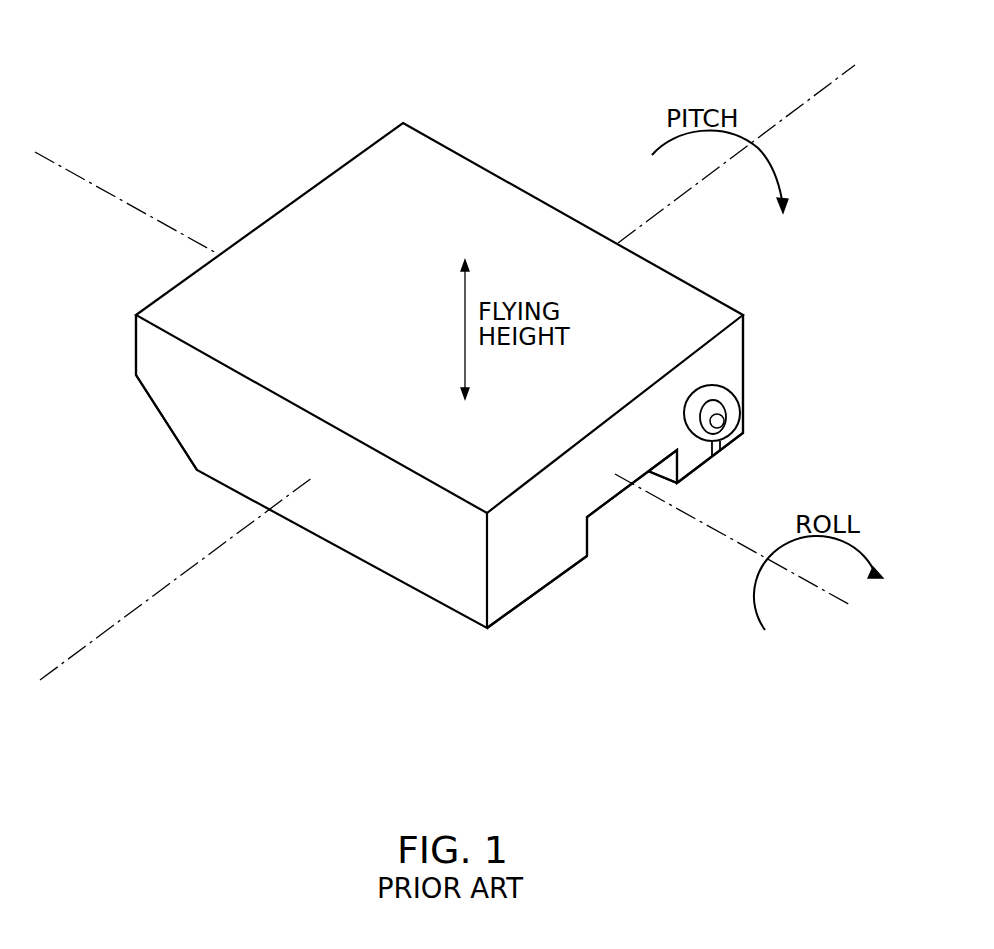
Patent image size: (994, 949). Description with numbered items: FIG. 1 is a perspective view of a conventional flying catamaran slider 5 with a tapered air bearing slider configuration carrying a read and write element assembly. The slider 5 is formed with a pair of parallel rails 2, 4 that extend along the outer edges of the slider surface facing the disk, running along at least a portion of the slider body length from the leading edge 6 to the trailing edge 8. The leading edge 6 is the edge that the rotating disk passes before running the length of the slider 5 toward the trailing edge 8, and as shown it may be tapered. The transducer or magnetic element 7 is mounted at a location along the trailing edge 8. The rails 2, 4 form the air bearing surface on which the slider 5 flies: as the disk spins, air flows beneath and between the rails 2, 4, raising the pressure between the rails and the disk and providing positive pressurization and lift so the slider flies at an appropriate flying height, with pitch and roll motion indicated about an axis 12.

The slider 5 is at (484, 124).
The leading edge face 6 is at (136, 348).
The trailing edge face 8 is at (743, 350).
The transducer head 7 is at (741, 412).
The air bearing rail 2 is at (703, 467).
The air bearing surface 4 is at (550, 583).
The pitch axis 12 is at (60, 166).